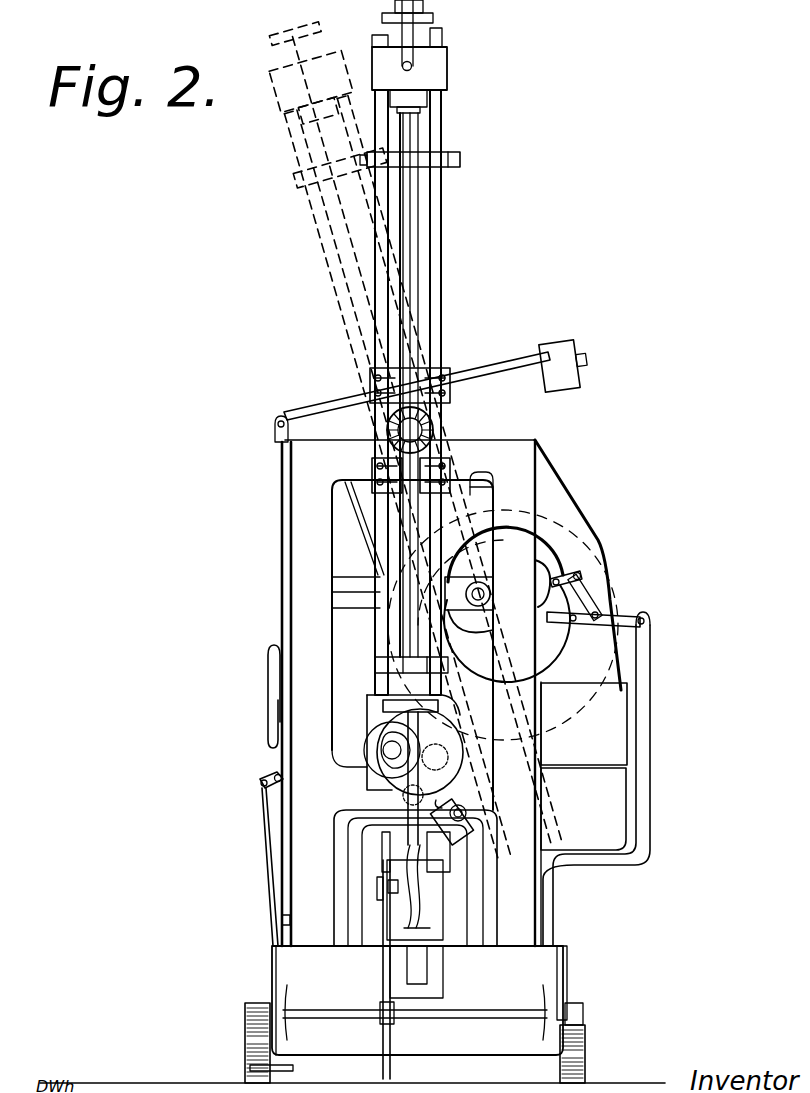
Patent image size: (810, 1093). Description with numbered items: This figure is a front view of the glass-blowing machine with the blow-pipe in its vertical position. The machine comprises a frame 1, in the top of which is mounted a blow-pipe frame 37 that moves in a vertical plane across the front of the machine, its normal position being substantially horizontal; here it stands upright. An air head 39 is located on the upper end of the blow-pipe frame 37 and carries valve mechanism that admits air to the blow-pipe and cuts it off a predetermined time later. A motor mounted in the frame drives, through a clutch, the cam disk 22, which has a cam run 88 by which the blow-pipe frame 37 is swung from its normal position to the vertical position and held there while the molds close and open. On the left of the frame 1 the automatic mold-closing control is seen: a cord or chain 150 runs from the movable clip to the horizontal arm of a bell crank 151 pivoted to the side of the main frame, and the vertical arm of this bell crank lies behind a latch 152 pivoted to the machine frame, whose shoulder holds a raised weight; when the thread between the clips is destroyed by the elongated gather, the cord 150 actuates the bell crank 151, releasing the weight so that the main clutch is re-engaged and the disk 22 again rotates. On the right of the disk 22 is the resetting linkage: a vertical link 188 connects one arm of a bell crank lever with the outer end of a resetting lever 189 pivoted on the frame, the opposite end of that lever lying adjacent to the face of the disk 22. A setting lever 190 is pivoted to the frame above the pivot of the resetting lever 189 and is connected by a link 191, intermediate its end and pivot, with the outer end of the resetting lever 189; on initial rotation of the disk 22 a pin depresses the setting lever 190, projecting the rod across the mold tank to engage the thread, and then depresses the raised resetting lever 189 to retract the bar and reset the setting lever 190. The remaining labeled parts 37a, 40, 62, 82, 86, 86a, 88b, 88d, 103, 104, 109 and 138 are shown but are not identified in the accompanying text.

The frame 1 is at (307, 537).
The cam disk 22 is at (553, 636).
The blow-pipe frame 37 is at (428, 312).
The mast in tilted position 37a is at (387, 200).
The air head 39 is at (420, 80).
The gear housing 40 is at (453, 757).
The bevel gear 62 is at (432, 416).
The clutch block 82 is at (472, 830).
The bracket 86 is at (368, 484).
The curved arm 86a is at (470, 568).
The cam run 88 is at (470, 522).
The cam bracket 88b is at (548, 566).
The cover plate 88d is at (543, 693).
The lever 103 is at (491, 370).
The handle 104 is at (555, 362).
The cap 109 is at (490, 487).
The crossbar 138 is at (450, 186).
The cord or chain 150 is at (270, 860).
The bell crank 151 is at (268, 777).
The latch 152 is at (272, 707).
The vertical link 188 is at (645, 706).
The resetting lever 189 is at (646, 621).
The setting lever 190 is at (583, 577).
The link 191 is at (596, 607).